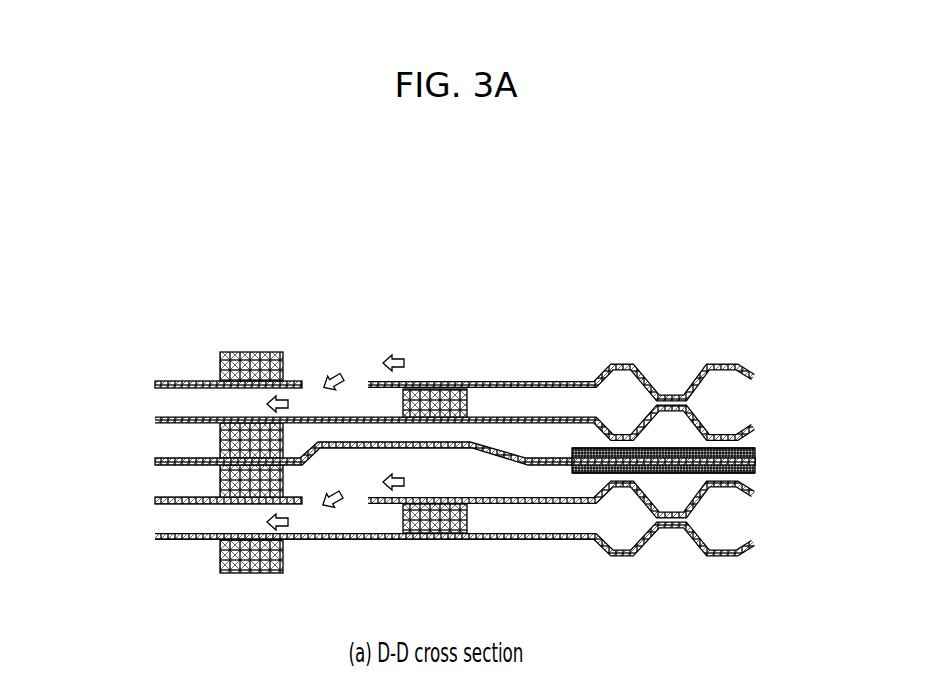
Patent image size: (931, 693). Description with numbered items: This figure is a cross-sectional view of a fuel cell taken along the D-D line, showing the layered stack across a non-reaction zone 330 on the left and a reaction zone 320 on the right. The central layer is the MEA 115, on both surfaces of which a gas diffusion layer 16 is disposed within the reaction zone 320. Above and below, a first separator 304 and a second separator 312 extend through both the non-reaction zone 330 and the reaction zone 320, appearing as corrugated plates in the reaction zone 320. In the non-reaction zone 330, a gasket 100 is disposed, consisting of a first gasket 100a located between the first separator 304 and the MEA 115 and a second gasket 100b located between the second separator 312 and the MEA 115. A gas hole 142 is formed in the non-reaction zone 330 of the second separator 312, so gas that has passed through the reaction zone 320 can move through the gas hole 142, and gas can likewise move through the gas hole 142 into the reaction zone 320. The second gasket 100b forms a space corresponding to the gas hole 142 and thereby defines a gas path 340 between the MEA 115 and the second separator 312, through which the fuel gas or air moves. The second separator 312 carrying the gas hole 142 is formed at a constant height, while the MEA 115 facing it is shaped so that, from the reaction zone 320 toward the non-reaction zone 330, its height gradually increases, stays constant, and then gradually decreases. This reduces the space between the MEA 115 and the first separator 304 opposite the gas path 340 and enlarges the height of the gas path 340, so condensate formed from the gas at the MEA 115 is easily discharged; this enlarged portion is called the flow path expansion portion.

The non-reaction zone 330 is at (572, 447).
The reaction zone 320 is at (756, 372).
The first separator 304 is at (700, 418).
The gas diffusion layer 16 is at (755, 448).
The MEA 115 is at (755, 461).
The second separator 312 is at (707, 497).
The gasket 100 is at (100, 427).
The first gasket 100a is at (220, 453).
The second gasket 100b is at (220, 491).
The gas hole 142 is at (361, 500).
The gas path 340 is at (467, 473).